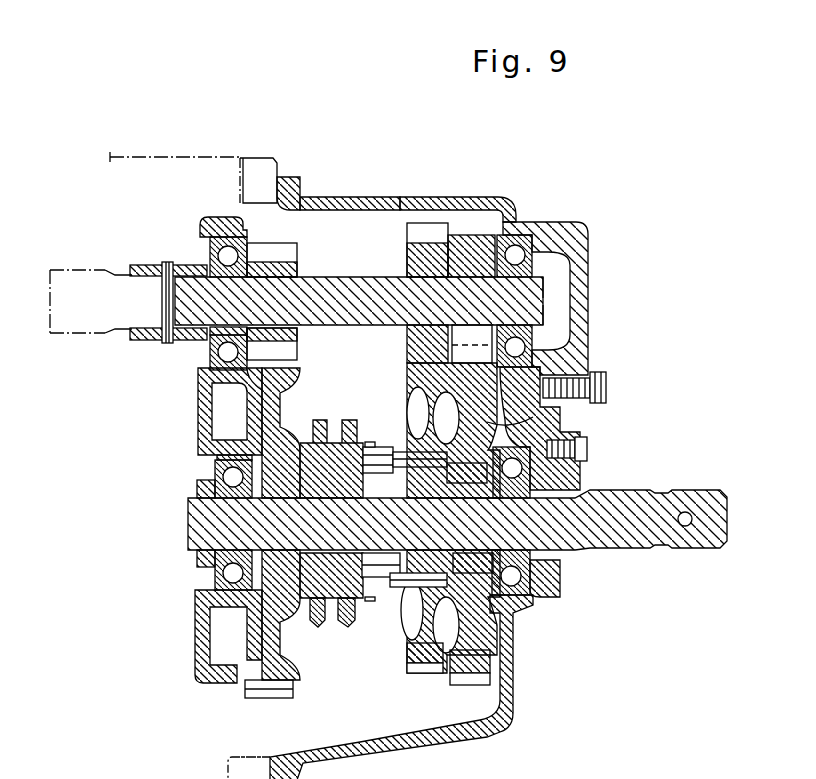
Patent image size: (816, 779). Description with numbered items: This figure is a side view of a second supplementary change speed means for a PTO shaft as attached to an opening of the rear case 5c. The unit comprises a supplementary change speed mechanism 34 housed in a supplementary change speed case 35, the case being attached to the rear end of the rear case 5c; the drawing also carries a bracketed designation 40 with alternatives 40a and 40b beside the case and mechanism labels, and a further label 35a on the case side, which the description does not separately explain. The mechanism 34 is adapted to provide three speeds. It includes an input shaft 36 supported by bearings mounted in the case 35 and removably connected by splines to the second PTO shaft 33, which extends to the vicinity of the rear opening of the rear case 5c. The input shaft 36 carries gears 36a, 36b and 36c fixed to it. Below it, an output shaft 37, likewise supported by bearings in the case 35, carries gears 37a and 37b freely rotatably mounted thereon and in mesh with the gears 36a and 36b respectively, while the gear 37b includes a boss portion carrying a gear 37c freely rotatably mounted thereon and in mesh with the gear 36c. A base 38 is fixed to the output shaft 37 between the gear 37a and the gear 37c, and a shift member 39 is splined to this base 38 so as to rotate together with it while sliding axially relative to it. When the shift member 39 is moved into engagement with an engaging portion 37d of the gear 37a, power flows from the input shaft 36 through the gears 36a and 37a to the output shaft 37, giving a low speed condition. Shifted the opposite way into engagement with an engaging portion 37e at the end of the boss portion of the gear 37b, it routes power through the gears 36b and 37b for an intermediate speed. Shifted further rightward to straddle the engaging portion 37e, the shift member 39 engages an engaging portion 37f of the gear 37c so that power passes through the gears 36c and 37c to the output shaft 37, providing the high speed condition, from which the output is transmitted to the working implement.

The rear case 5c is at (182, 157).
The second PTO shaft 33 is at (103, 266).
The supplementary change speed mechanism 34 is at (338, 171).
The supplementary change speed case 35 is at (441, 168).
The cover assembly 40 is at (396, 156).
The cover part 40a is at (382, 227).
The cover part 40b is at (408, 197).
The input shaft 36 is at (543, 298).
The gear 36a is at (297, 255).
The gear 36b is at (477, 233).
The gear 36c is at (440, 225).
The output shaft 37 is at (635, 532).
The gear 37a is at (260, 402).
The gear 37b is at (533, 417).
The gear 37c is at (410, 388).
The engaging portion 37d is at (307, 442).
The engaging portion 37e is at (372, 440).
The engaging portion 37f is at (390, 602).
The base 38 is at (372, 598).
The shift member 39 is at (333, 622).
The bearing cap 35a is at (192, 458).